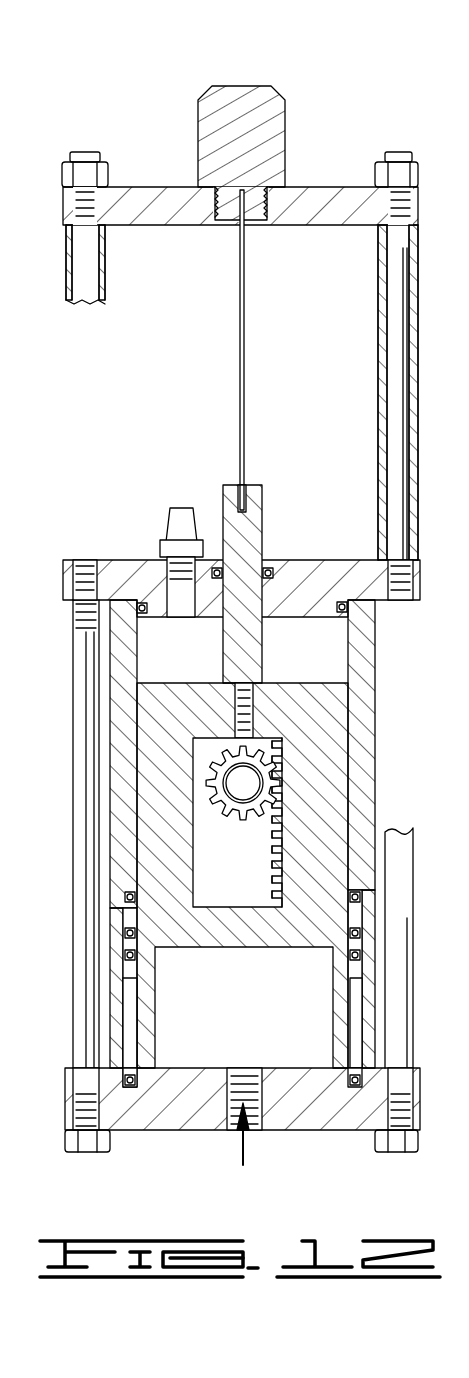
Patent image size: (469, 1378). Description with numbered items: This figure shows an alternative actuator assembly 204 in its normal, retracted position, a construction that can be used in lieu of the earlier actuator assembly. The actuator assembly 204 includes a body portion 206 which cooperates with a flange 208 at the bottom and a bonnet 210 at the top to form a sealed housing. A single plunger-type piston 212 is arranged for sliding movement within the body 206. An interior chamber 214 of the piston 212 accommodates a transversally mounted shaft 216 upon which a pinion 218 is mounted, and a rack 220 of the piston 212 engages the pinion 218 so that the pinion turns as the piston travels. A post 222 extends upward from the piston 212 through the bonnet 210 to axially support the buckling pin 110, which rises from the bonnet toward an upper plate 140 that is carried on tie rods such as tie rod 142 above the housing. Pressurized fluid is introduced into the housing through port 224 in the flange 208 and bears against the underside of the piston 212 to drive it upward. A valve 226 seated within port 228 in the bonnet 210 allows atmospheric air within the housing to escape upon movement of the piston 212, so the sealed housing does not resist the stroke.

The actuator assembly 204 is at (156, 72).
The top plate 140 is at (304, 182).
The tie rod 142 is at (397, 287).
The buckling pin 110 is at (239, 362).
The post 222 is at (249, 485).
The valve 226 is at (176, 526).
The bonnet 210 is at (293, 560).
The port 228 is at (193, 618).
The plunger-type piston 212 is at (145, 714).
The body portion 206 is at (377, 680).
The shaft 216 is at (236, 782).
The pinion 218 is at (227, 810).
The interior chamber 214 is at (218, 858).
The rack 220 is at (268, 898).
The port 224 is at (234, 1132).
The flange 208 is at (290, 1130).